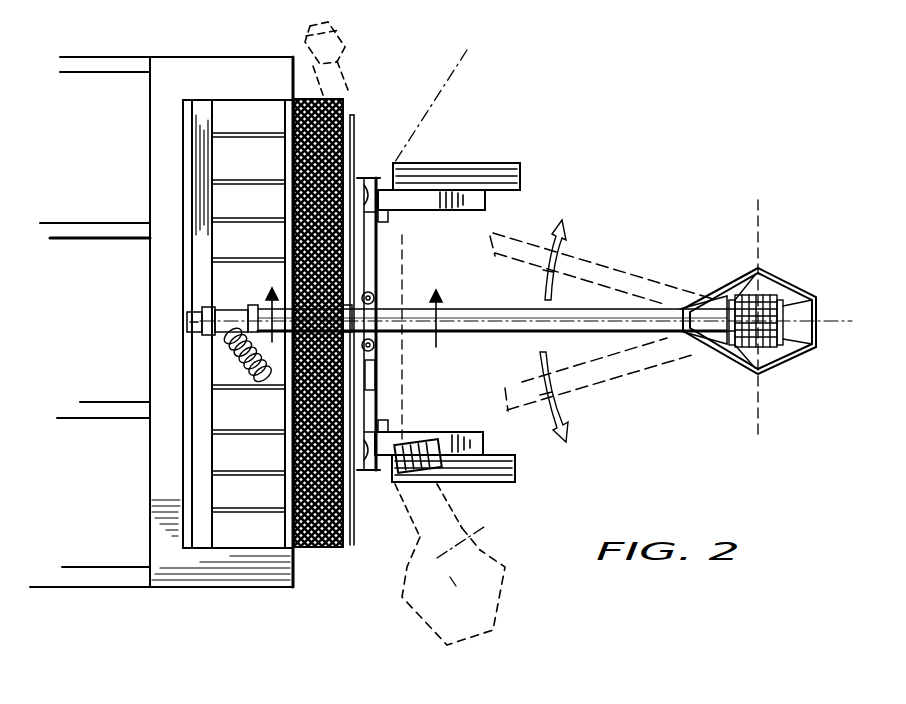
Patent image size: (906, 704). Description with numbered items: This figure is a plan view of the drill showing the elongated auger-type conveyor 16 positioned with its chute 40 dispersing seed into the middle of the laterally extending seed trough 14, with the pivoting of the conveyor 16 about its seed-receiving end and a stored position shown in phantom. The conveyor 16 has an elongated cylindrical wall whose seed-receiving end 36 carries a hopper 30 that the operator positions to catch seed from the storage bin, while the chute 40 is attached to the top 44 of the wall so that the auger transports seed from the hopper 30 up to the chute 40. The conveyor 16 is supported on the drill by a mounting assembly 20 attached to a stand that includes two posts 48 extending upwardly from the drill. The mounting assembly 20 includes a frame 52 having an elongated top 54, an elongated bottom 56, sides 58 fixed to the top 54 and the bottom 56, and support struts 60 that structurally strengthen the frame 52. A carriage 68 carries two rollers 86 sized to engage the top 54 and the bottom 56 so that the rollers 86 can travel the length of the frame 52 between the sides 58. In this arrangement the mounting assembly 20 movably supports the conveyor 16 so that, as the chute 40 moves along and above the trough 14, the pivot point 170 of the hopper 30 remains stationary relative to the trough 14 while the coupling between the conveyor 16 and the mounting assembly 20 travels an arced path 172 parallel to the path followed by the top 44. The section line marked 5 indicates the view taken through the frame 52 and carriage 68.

The seed trough 14 is at (243, 114).
The top 54 is at (300, 205).
The support struts 60 is at (300, 165).
The mounting assembly 20 is at (396, 283).
The top 44 is at (238, 318).
The chute 40 is at (236, 345).
The section line 5 is at (351, 308).
The frame 52 is at (376, 168).
The rollers 86 is at (378, 348).
The carriage 68 is at (386, 376).
The bottom 56 is at (398, 172).
The posts 48 is at (390, 216).
The sides 58 is at (376, 176).
The arced path 172 is at (470, 541).
The conveyor 16 is at (512, 300).
The seed-receiving end 36 is at (708, 316).
The hopper 30 is at (785, 370).
The pivot point 170 is at (762, 300).